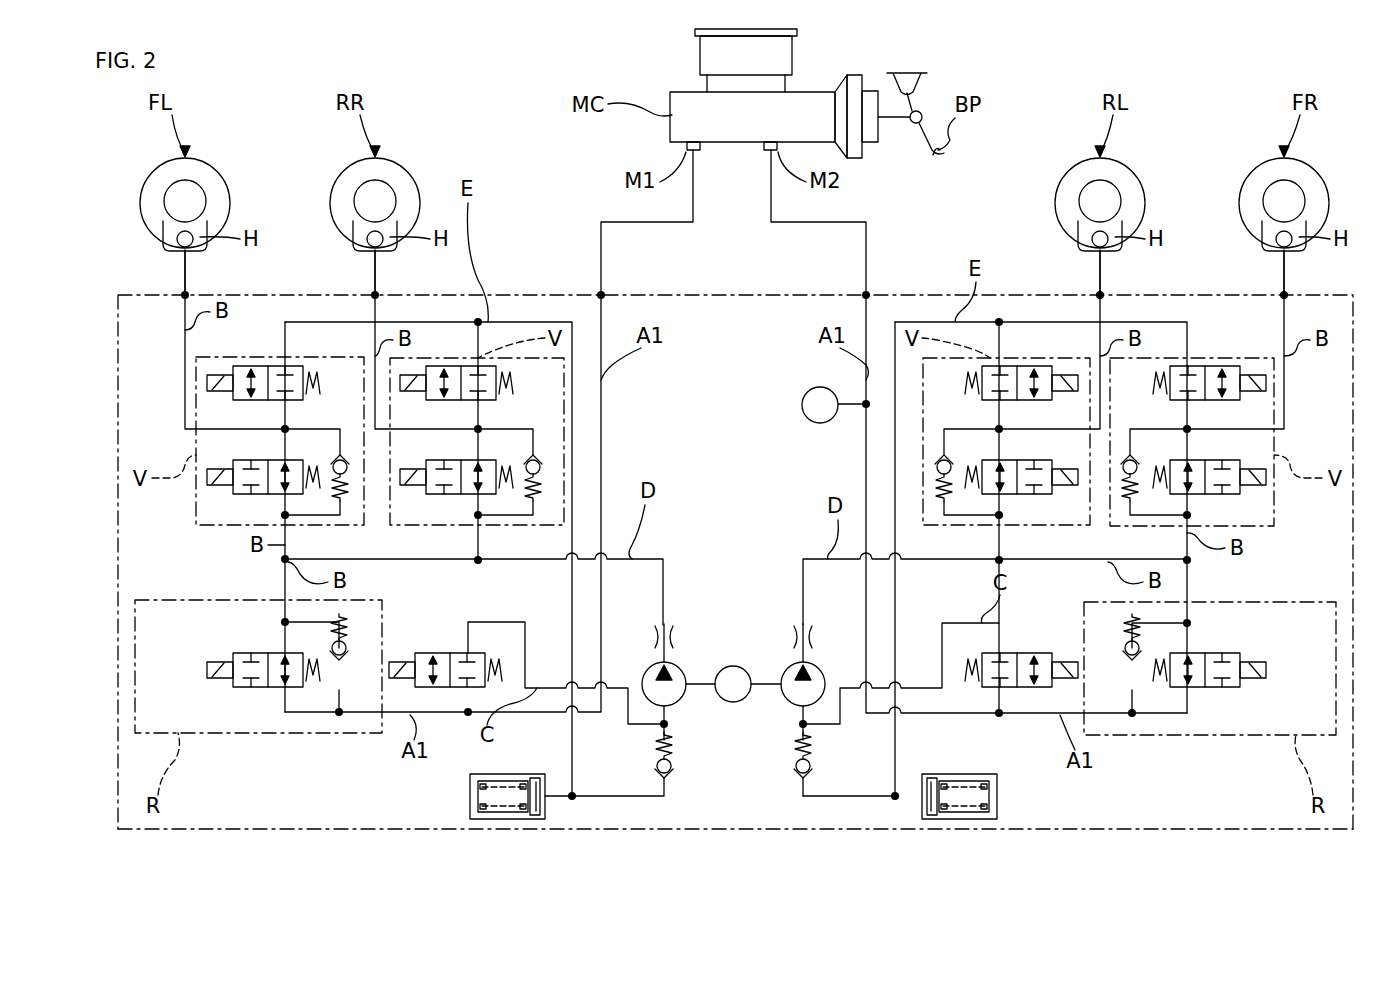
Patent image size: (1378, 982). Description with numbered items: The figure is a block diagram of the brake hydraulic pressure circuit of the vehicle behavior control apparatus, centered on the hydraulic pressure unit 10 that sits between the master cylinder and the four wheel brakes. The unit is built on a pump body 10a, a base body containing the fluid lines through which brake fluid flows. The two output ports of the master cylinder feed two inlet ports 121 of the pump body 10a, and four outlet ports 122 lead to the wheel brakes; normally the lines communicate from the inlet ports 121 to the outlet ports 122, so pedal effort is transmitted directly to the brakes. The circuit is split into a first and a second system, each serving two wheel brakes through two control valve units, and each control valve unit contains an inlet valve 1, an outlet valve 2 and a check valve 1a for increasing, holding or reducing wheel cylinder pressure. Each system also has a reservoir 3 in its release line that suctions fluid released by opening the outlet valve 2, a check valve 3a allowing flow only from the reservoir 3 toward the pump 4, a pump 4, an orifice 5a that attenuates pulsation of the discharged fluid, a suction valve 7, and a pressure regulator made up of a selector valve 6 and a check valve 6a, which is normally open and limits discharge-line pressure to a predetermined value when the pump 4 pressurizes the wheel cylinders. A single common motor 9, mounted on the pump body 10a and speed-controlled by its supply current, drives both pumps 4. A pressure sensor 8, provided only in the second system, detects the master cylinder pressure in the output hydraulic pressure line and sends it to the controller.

The inlet valve 1 is at (243, 494).
The check valve 1a is at (347, 466).
The outlet valve 2 is at (298, 366).
The reservoir 3 is at (452, 806).
The check valve 3a is at (672, 766).
The pump 4 is at (676, 700).
The orifice 5a is at (680, 640).
The selector valve 6 is at (243, 688).
The check valve 6a is at (346, 678).
The suction valve 7 is at (425, 653).
The pressure sensor 8 is at (802, 406).
The motor 9 is at (733, 666).
The hydraulic pressure unit 10 is at (948, 268).
The pump body 10a is at (305, 830).
The inlet port 121 is at (601, 293).
The outlet port 122 is at (188, 294).